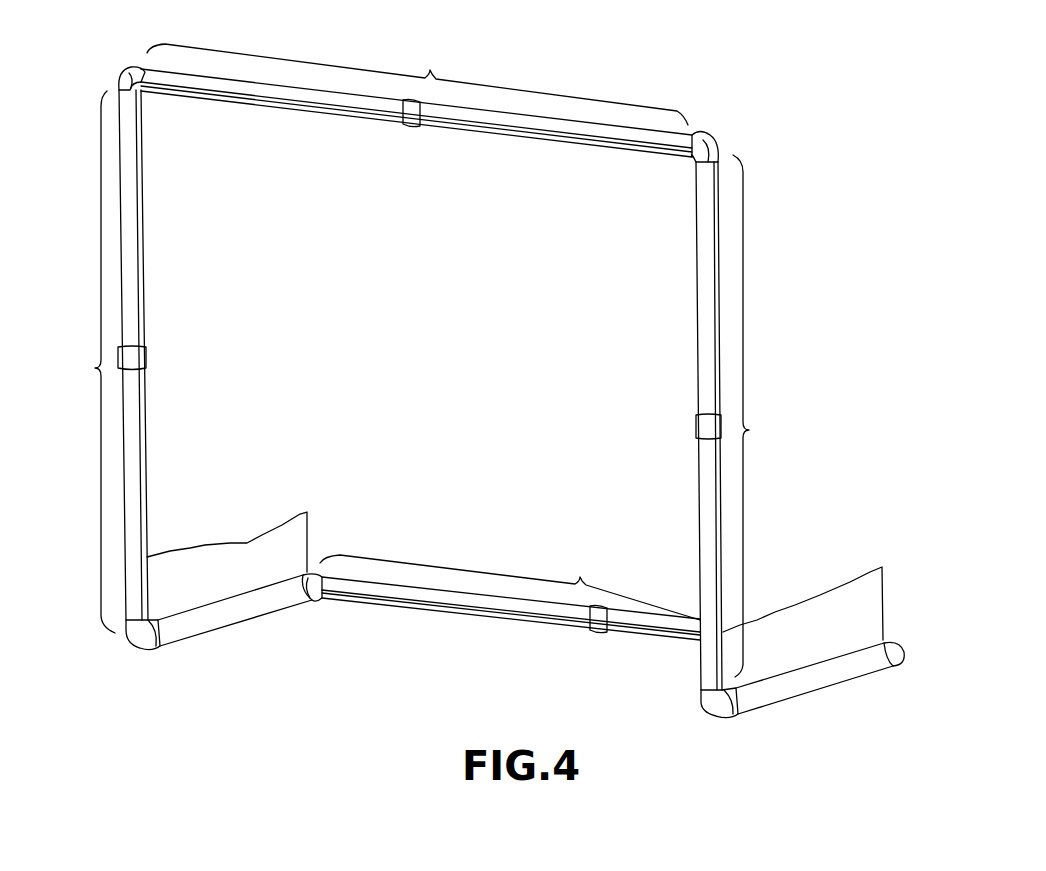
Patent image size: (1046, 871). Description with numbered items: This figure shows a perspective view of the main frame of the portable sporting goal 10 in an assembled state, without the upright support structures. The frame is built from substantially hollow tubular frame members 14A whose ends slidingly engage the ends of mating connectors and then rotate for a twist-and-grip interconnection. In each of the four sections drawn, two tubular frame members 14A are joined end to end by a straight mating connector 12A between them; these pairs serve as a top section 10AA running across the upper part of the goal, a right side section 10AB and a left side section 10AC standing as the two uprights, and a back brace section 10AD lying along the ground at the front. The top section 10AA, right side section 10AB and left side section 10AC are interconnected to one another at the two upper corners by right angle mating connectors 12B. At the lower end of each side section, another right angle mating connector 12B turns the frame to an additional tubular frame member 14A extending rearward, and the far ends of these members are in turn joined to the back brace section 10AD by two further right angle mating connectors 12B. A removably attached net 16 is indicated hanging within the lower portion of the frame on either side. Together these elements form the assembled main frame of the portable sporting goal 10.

The portable sporting goal 10 is at (503, 673).
The top section 10AA is at (417, 82).
The right side section 10AB is at (774, 416).
The left side section 10AC is at (74, 362).
The back brace section 10AD is at (510, 581).
The straight mating connector 12A is at (412, 124).
The right angle mating connector 12B is at (128, 68).
The tubular frame member 14A is at (253, 107).
The net 16 is at (258, 535).